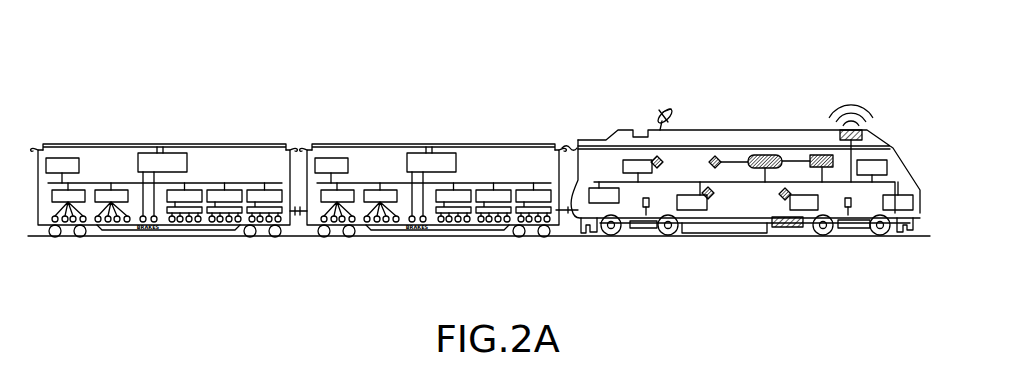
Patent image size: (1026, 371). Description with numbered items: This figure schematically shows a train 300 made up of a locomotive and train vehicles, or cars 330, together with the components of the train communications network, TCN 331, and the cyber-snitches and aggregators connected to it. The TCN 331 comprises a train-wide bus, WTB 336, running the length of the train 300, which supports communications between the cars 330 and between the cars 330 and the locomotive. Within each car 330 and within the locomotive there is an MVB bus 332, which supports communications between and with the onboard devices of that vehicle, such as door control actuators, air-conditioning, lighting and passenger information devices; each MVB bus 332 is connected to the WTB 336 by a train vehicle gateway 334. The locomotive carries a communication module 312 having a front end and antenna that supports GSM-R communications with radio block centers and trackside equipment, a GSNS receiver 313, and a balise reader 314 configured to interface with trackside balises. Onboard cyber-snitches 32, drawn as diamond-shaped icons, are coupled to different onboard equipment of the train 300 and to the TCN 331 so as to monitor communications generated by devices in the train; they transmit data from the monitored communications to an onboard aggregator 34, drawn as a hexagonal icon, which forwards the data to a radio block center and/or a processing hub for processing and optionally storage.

The train 300 is at (125, 42).
The train vehicle 330 is at (358, 163).
The train communications network (TCN) 331 is at (150, 296).
The MVB bus 332 is at (137, 187).
The train vehicle gateway 334 is at (188, 162).
The WTB bus 336 is at (100, 148).
The GSNS receiver 313 is at (664, 104).
The communication module 312 is at (852, 130).
The onboard aggregator node 34 is at (765, 155).
The onboard cyber-snitch 32 is at (773, 190).
The balise reader 314 is at (787, 227).